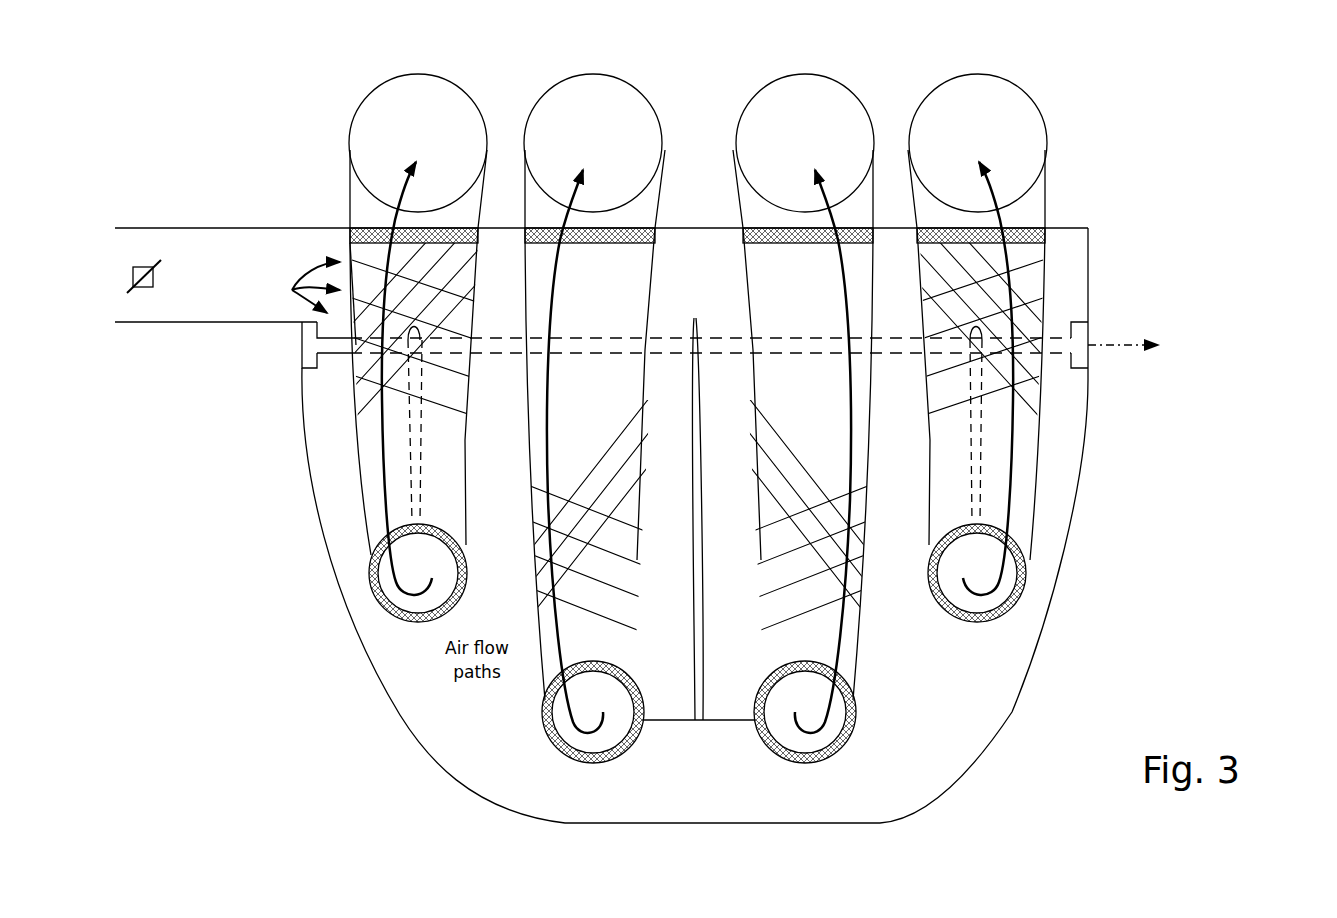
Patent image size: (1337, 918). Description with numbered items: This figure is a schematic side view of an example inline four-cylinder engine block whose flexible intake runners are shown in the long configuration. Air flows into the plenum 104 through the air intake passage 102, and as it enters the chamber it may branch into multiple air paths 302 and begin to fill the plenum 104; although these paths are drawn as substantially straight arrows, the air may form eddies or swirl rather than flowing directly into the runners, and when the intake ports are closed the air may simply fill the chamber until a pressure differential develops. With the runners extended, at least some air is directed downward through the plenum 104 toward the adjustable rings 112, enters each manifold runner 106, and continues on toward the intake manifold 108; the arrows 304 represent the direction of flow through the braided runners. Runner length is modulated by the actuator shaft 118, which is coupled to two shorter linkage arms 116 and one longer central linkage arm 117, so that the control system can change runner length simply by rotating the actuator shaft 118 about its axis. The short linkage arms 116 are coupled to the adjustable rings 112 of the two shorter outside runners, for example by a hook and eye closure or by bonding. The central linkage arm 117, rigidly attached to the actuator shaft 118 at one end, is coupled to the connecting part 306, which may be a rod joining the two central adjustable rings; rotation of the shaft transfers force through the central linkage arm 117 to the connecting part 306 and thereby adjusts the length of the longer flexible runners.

The air intake passage 102 is at (200, 250).
The plenum 104 is at (1010, 708).
The manifold runner 106 is at (355, 435).
The intake manifold 108 is at (698, 143).
The adjustable ring 112 is at (380, 603).
The short linkage arm 116 is at (412, 464).
The central linkage arm 117 is at (690, 577).
The actuator shaft 118 is at (1053, 353).
The air paths 302 is at (292, 288).
The arrows 304 is at (382, 503).
The connecting part 306 is at (718, 722).